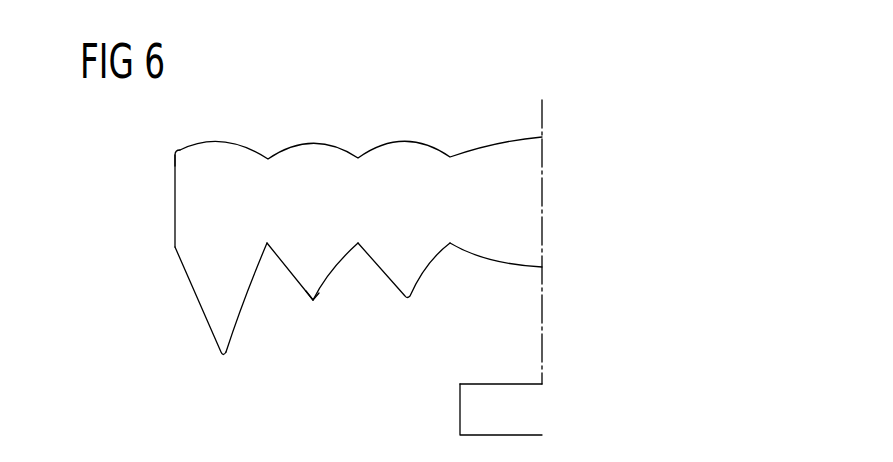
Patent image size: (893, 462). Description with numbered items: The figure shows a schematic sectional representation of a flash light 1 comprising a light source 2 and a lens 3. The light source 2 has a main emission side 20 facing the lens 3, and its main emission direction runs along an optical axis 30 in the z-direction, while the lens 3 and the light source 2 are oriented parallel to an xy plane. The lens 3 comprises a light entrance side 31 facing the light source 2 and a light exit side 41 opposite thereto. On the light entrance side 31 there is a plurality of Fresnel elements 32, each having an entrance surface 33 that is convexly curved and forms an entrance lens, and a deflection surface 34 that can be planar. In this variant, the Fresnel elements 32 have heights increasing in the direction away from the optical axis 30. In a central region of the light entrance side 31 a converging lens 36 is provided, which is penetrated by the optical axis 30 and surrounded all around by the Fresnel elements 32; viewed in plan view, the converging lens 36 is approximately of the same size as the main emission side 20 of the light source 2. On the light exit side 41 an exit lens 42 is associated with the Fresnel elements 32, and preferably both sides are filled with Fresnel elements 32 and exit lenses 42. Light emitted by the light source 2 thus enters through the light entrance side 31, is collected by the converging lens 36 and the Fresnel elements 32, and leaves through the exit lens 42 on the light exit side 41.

The flash light 1 is at (651, 97).
The light source 2 is at (467, 410).
The main emission side 20 is at (502, 384).
The lens 3 is at (183, 202).
The optical axis 30 is at (543, 121).
The light entrance side 31 is at (157, 290).
The Fresnel elements 32 is at (313, 301).
The entrance surface 33 is at (338, 277).
The deflection surface 34 is at (297, 277).
The converging lens 36 is at (503, 262).
The light exit side 41 is at (150, 146).
The exit lens 42 is at (403, 138).